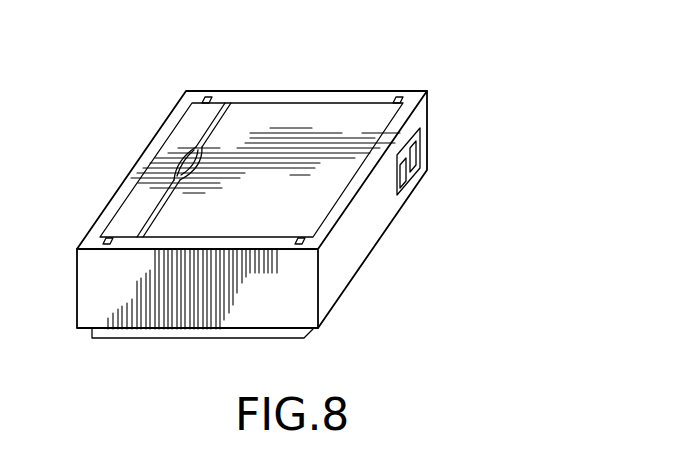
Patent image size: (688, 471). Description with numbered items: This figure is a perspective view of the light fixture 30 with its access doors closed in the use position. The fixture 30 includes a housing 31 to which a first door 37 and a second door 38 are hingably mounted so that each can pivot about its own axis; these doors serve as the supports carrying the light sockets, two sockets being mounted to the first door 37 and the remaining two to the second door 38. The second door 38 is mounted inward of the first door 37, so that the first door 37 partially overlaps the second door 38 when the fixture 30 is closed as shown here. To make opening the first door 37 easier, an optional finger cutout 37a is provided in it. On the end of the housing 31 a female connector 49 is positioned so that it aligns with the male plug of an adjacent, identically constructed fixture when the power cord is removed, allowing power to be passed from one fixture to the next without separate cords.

The light fixture 30 is at (460, 81).
The housing 31 is at (352, 247).
The first door 37 is at (308, 118).
The finger cutout 37a is at (189, 166).
The second door 38 is at (157, 172).
The female connector 49 is at (413, 150).